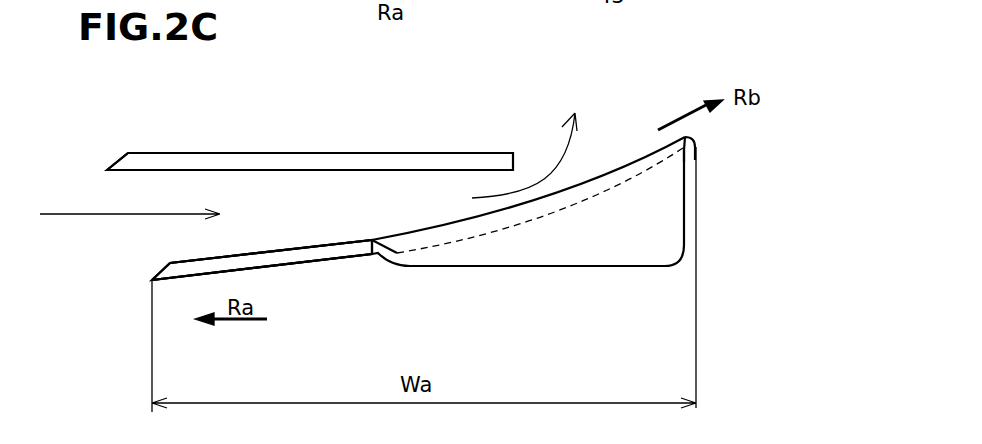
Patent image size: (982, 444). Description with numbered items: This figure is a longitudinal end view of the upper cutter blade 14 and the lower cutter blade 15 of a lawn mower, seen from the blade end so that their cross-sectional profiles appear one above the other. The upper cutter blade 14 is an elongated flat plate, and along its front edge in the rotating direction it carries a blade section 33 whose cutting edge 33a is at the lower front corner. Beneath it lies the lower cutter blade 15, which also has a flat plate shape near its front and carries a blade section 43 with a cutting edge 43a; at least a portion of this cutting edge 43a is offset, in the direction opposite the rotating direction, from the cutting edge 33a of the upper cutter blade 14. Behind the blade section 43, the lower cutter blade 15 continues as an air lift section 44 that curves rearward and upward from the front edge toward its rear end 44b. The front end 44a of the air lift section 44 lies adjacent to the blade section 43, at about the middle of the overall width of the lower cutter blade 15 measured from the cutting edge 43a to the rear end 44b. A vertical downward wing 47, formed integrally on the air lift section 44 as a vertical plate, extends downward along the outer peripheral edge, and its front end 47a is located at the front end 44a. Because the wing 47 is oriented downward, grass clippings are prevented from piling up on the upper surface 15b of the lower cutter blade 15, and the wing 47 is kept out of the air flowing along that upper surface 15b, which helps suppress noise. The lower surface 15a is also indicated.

The upper cutter blade 14 is at (247, 151).
The blade section 33 is at (115, 160).
The cutting edge 33a is at (107, 171).
The lower cutter blade 15 is at (282, 250).
The lower surface of lower guide plate 15a is at (302, 263).
The upper surface 15b is at (337, 245).
The blade section 43 is at (163, 270).
The cutting edge 43a is at (152, 280).
The air lift section 44 is at (628, 163).
The front end of air lift section 44a is at (368, 258).
The rear end of air lift section 44b is at (697, 140).
The vertical downward wing 47 is at (590, 258).
The front end of vertical downward wing 47a is at (368, 258).